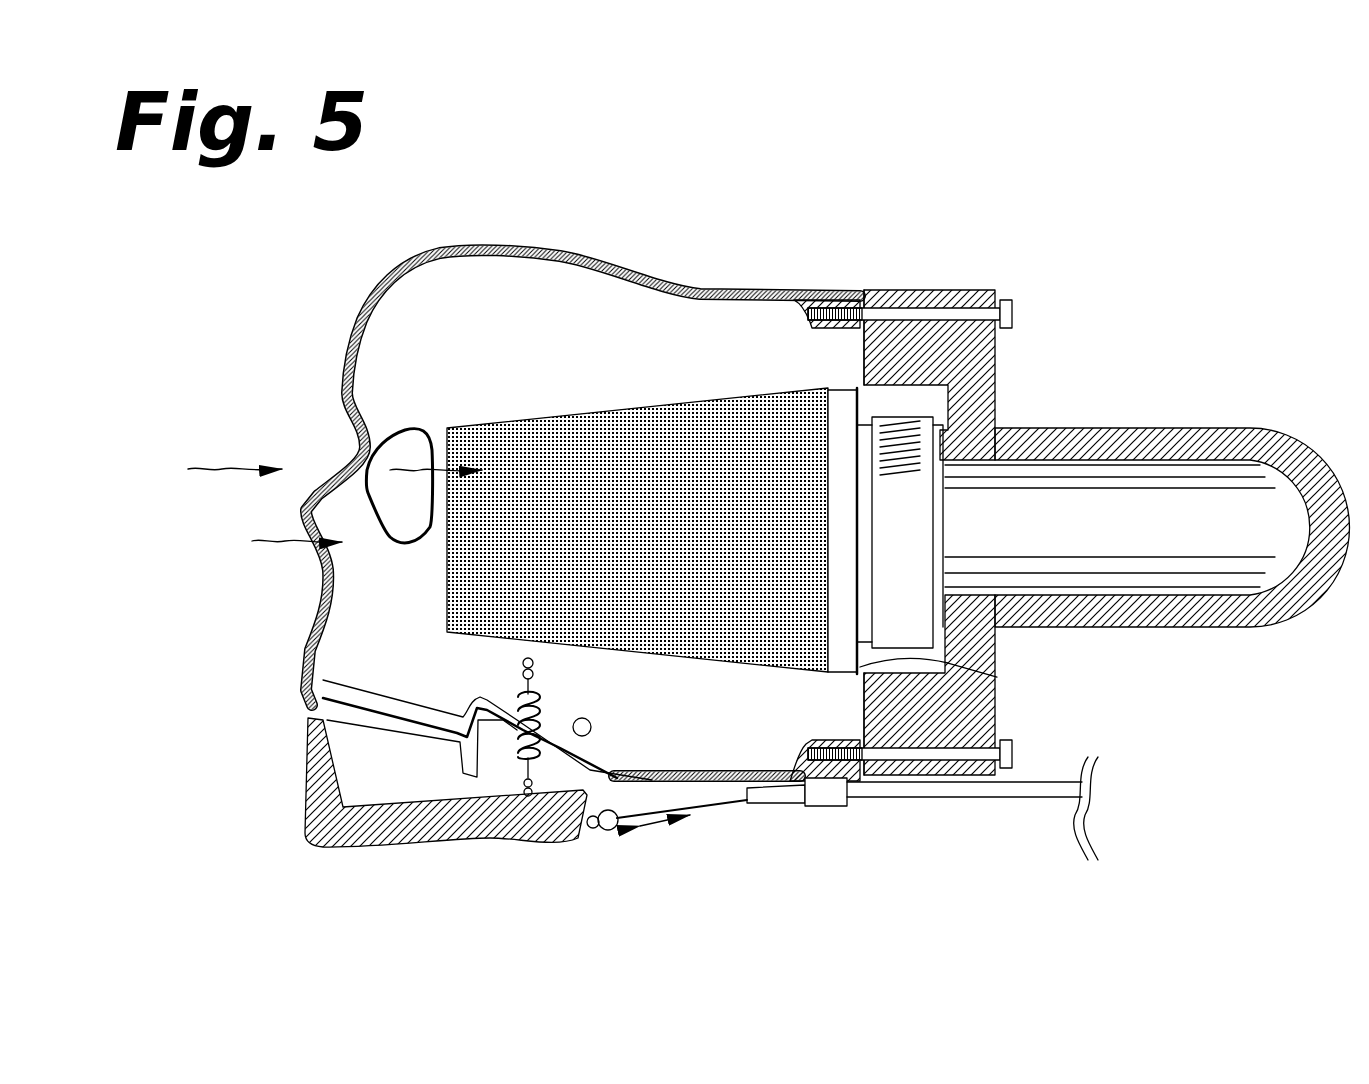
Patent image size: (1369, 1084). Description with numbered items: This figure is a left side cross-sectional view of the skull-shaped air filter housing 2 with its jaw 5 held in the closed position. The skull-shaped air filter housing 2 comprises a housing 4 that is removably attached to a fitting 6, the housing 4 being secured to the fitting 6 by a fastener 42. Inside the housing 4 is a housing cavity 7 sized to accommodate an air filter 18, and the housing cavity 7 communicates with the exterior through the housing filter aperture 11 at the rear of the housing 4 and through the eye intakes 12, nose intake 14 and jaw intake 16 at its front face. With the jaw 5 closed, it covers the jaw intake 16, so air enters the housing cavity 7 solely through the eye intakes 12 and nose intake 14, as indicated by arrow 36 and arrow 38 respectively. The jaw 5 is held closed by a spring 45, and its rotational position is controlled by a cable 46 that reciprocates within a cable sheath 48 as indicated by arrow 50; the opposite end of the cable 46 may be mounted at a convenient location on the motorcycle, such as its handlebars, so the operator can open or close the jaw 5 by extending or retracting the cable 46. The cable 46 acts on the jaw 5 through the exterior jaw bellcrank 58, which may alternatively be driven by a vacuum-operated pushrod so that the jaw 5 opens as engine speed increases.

The skull-shaped air filter housing 2 is at (1034, 160).
The housing 4 is at (603, 262).
The jaw 5 is at (306, 790).
The fitting 6 is at (1236, 430).
The housing cavity 7 is at (424, 287).
The housing filter aperture 11 is at (997, 677).
The eye intakes 12 is at (417, 470).
The nose intake 14 is at (321, 558).
The jaw intake 16 is at (370, 723).
The air filter 18 is at (707, 403).
The arrow 36 is at (417, 453).
The arrow 38 is at (285, 542).
The fastener 42 is at (1012, 313).
The spring 45 is at (523, 800).
The cable 46 is at (723, 800).
The cable sheath 48 is at (933, 800).
The arrow 50 is at (660, 822).
The exterior jaw bellcrank 58 is at (588, 830).